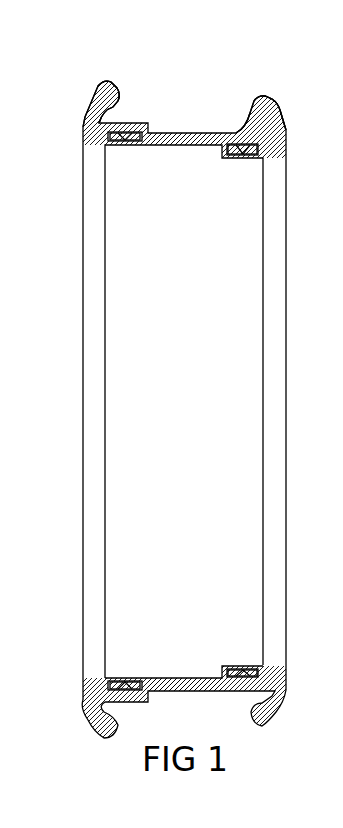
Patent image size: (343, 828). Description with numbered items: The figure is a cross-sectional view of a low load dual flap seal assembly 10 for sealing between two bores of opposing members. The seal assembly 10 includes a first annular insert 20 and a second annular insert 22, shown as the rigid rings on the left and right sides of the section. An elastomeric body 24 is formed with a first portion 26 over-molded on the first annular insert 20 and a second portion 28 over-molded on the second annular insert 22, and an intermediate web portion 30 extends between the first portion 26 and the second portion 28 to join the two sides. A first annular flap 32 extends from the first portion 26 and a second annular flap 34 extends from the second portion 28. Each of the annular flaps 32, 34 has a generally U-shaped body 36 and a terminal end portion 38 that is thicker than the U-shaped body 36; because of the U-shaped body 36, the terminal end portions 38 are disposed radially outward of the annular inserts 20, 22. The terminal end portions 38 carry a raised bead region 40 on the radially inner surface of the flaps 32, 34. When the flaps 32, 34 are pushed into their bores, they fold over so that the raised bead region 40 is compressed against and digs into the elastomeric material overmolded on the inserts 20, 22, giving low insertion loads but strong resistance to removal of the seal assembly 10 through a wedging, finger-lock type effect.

The seal assembly 10 is at (229, 84).
The first annular insert 20 is at (128, 680).
The second annular insert 22 is at (245, 670).
The elastomeric body 24 is at (192, 694).
The first portion 26 is at (128, 145).
The second portion 28 is at (243, 158).
The intermediate web portion 30 is at (188, 132).
The first annular flap 32 is at (98, 88).
The second annular flap 34 is at (279, 96).
The U-shaped body 36 is at (88, 121).
The terminal end portion 38 is at (108, 84).
The raised bead region 40 is at (118, 104).